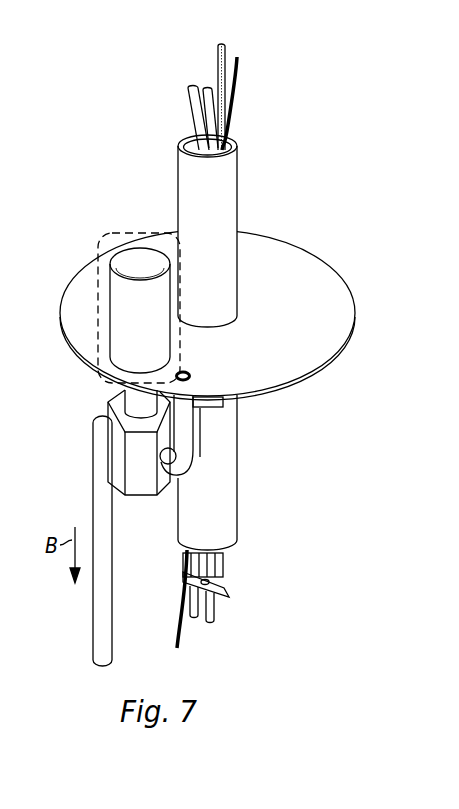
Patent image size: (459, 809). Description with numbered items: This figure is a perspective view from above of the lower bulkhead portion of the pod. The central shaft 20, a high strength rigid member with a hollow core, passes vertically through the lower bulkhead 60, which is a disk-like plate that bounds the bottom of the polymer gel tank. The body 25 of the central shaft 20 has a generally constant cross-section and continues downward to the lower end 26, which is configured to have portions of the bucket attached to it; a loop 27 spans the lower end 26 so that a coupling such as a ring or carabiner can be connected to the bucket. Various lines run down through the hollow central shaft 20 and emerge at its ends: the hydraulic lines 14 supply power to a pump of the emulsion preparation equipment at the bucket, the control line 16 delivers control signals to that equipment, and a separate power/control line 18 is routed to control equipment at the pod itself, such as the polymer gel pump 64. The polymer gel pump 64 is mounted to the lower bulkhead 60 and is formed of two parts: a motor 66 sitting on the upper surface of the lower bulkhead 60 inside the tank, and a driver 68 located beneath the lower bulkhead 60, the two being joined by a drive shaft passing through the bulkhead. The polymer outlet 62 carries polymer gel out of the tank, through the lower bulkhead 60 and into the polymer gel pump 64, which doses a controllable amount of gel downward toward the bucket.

The hydraulic lines 14 is at (189, 106).
The control line 16 is at (237, 91).
The power/control line 18 is at (219, 62).
The central shaft 20 is at (160, 172).
The body 25 is at (222, 197).
The lower end 26 is at (233, 529).
The loop 27 is at (228, 587).
The lower bulkhead 60 is at (340, 373).
The polymer outlet 62 is at (183, 437).
The polymer gel pump 64 is at (84, 318).
The motor 66 is at (120, 295).
The driver 68 is at (117, 452).